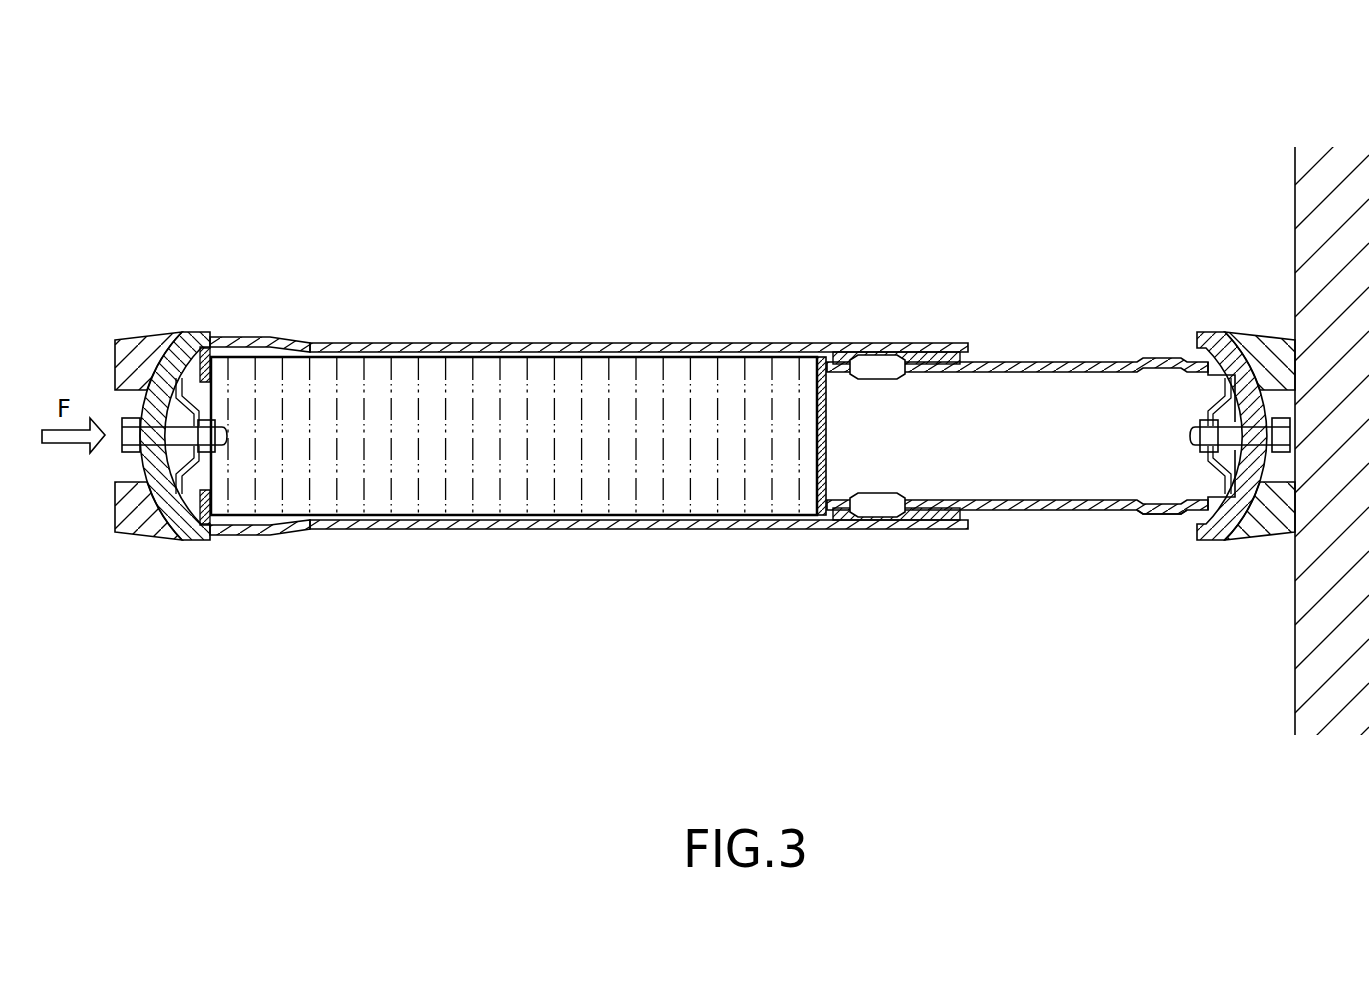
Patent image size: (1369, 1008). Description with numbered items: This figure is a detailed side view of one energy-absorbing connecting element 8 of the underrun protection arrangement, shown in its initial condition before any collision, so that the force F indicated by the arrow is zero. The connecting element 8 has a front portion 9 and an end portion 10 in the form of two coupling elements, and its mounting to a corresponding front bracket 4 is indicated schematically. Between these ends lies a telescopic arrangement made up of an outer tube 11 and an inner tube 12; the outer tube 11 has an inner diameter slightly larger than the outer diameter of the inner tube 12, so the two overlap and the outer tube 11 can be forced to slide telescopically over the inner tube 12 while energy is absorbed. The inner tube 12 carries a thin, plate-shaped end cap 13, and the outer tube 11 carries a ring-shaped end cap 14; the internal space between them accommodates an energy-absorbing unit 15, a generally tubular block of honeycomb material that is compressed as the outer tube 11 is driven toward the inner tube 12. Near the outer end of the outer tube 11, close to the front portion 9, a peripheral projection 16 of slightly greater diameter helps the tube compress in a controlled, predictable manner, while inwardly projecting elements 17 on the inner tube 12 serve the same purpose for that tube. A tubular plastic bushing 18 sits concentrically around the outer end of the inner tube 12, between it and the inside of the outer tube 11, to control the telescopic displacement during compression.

The front bracket 4 is at (1293, 200).
The energy-absorbing connecting element 8 is at (517, 140).
The front portion 9 is at (153, 568).
The end portion 10 is at (1282, 548).
The outer tube 11 is at (584, 391).
The inner tube 12 is at (1057, 338).
The end cap 13 is at (827, 473).
The end cap 14 is at (182, 538).
The energy-absorbing unit 15 is at (540, 415).
The peripheral projection 16 is at (280, 340).
The inwardly projecting elements 17 is at (887, 380).
The tubular bushing 18 is at (933, 353).